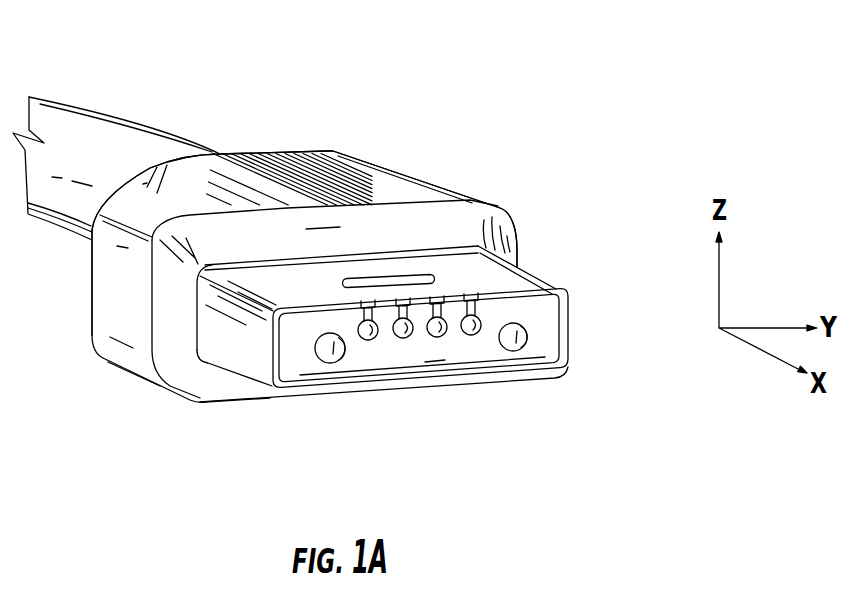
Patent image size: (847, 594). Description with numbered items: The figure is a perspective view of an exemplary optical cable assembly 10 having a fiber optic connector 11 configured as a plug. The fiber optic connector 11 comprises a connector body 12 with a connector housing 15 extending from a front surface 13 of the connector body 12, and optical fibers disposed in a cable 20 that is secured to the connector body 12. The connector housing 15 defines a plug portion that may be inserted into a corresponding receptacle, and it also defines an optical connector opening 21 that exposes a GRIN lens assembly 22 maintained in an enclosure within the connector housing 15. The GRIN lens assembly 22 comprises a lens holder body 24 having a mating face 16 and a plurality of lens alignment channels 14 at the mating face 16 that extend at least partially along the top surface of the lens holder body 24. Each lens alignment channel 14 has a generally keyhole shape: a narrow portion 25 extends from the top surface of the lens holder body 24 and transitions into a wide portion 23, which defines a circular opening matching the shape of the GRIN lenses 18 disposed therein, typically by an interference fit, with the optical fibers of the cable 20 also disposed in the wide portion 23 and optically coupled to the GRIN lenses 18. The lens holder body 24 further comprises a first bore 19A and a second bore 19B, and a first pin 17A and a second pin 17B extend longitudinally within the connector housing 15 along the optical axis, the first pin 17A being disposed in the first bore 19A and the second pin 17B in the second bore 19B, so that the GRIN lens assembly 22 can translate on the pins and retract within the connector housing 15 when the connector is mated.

The optical cable assembly 10 is at (504, 138).
The fiber optic connector 11 is at (412, 163).
The connector body 12 is at (323, 153).
The front surface 13 is at (506, 238).
The lens alignment channels 14 is at (353, 324).
The connector housing 15 is at (568, 306).
The mating face 16 is at (433, 367).
The first pin 17A is at (327, 346).
The second pin 17B is at (530, 333).
The GRIN lenses 18 is at (403, 338).
The first bore 19A is at (329, 362).
The second bore 19B is at (527, 348).
The cable 20 is at (124, 113).
The optical connector opening 21 is at (328, 392).
The GRIN lens assembly 22 is at (390, 369).
The wide portion 23 is at (402, 338).
The lens holder body 24 is at (548, 318).
The narrow portion 25 is at (389, 319).